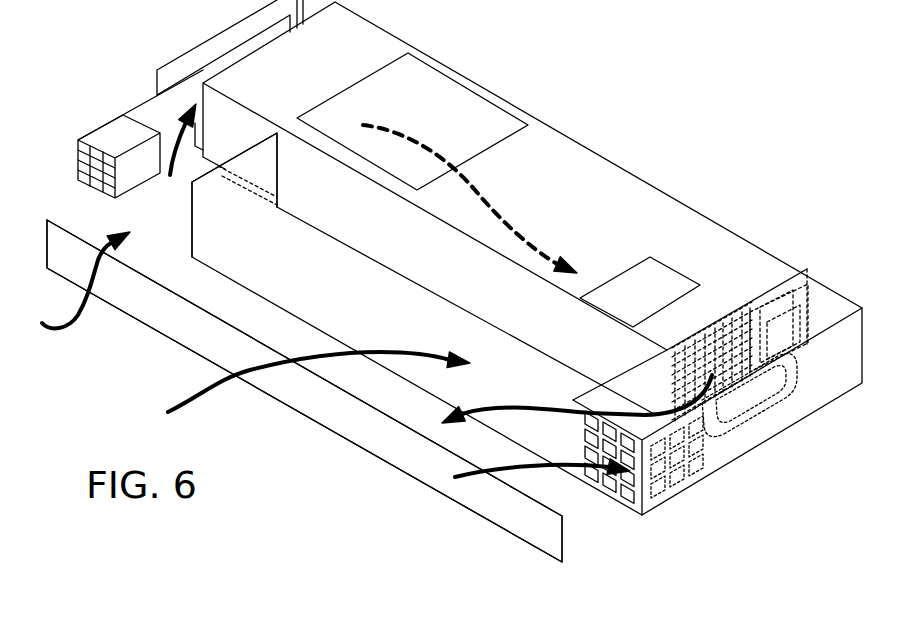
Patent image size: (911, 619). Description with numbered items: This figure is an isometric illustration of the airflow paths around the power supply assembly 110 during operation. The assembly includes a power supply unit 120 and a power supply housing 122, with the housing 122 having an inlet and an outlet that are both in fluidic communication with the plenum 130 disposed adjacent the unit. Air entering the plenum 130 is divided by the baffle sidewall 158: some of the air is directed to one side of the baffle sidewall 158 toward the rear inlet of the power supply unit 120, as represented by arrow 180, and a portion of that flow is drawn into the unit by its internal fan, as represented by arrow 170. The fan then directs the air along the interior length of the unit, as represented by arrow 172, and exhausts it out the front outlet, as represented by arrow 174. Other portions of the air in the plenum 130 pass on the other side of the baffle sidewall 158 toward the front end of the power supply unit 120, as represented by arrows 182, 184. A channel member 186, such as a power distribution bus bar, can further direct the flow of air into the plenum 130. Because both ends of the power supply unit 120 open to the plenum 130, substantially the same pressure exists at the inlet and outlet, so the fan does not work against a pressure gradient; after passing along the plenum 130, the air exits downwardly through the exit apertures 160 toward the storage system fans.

The power supply assembly 110 is at (724, 107).
The power supply unit 120 is at (650, 208).
The power supply housing 122 is at (824, 305).
The plenum 130 is at (64, 191).
The baffle sidewall 158 is at (222, 220).
The exit apertures 160 is at (635, 520).
The airflow into PSU inlet 170 is at (170, 130).
The airflow along PSU interior 172 is at (493, 212).
The airflow exhausted from PSU outlet 174 is at (520, 405).
The airflow toward PSU inlet side of baffle 180 is at (78, 328).
The airflow on other side of baffle 182 is at (208, 398).
The airflow toward PSU front end 184 is at (540, 468).
The channel member 186 is at (492, 500).